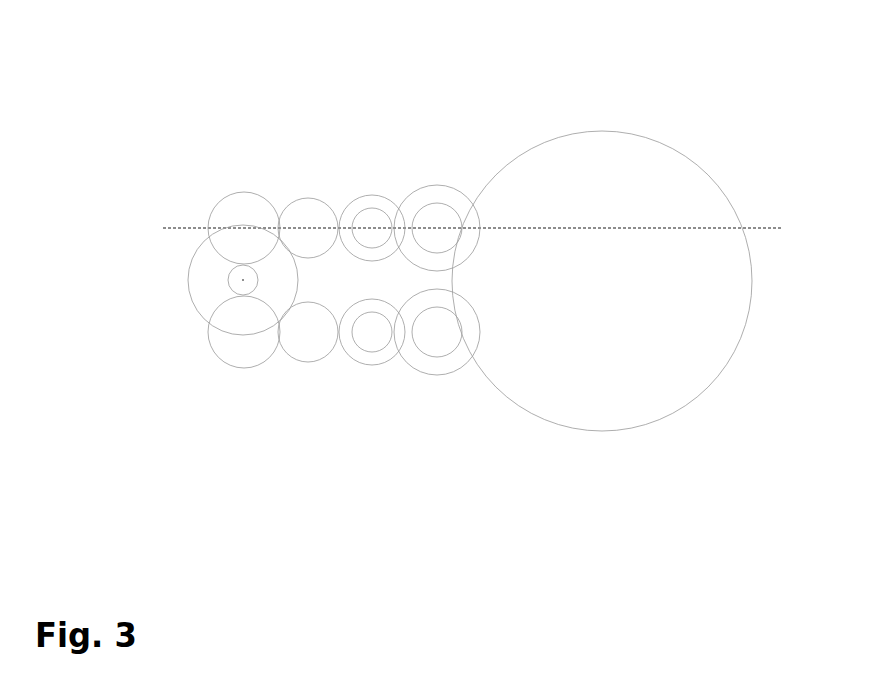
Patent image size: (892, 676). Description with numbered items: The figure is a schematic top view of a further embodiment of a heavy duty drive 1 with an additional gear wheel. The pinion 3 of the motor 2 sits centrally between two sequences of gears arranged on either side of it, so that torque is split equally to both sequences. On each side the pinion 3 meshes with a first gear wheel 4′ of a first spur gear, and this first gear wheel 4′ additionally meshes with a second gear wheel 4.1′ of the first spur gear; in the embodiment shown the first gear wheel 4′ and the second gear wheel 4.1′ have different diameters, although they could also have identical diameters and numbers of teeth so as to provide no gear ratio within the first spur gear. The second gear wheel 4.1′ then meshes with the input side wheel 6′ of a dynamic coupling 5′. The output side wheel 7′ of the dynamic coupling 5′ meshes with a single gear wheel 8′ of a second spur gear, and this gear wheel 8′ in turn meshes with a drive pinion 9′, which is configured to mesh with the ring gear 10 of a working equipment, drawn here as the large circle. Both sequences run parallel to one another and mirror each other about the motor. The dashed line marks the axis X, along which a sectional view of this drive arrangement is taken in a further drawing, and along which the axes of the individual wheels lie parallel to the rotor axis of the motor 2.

The heavy duty drive 1 is at (160, 129).
The motor 2 is at (187, 287).
The pinion 3 is at (227, 280).
The first gear wheel 4′ is at (242, 195).
The second gear wheel 4.1′ is at (306, 200).
The dynamic coupling 5′ is at (372, 180).
The input side wheel 6′ is at (350, 202).
The output side wheel 7′ is at (376, 210).
The gear wheel of second spur gear 8′ is at (433, 182).
The drive pinion 9′ is at (442, 200).
The ring gear 10 is at (672, 145).
The axis X is at (772, 228).